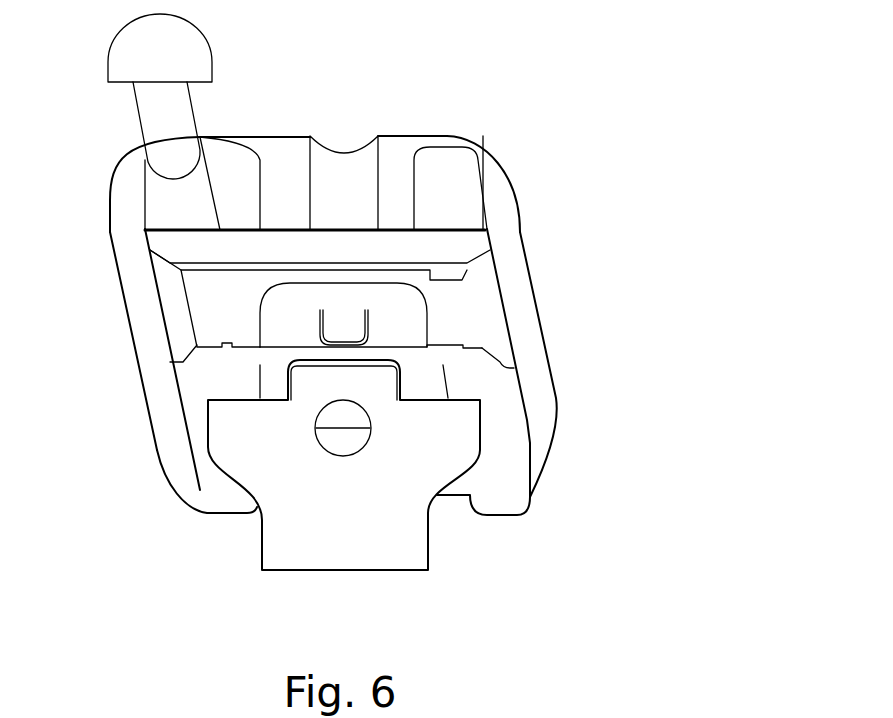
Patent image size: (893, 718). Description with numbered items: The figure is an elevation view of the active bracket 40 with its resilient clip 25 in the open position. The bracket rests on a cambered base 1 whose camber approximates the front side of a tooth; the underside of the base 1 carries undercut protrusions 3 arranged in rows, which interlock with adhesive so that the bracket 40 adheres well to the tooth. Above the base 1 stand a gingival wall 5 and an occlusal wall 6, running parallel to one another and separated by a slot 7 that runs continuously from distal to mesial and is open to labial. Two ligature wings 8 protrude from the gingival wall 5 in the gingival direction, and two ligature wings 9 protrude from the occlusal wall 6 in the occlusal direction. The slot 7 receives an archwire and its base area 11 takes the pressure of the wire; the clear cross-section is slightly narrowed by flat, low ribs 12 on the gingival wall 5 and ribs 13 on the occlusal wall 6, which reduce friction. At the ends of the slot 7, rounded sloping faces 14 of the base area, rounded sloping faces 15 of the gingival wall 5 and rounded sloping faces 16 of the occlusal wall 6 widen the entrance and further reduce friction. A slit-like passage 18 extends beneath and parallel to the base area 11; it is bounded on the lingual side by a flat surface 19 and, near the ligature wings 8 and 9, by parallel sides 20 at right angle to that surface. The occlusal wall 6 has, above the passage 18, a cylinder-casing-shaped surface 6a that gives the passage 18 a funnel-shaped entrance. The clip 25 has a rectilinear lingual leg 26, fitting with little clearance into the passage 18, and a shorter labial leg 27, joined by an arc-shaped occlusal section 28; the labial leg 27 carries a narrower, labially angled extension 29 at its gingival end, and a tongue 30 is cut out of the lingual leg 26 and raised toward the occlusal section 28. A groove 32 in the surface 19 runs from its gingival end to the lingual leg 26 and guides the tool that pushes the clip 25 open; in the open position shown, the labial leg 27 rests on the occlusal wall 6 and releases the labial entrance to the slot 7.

The base 1 is at (130, 185).
The protrusions 3 is at (164, 122).
The gingival wall 5 is at (492, 240).
The occlusal wall 6 is at (267, 383).
The cylinder-casing-shaped surface 6a is at (463, 520).
The slot 7 is at (470, 315).
The ligature wings 8 is at (200, 175).
The ligature wings 9 is at (223, 500).
The base area 11 is at (212, 330).
The ribs 12 is at (268, 252).
The ribs 13 is at (195, 350).
The rounded sloping faces 14 is at (172, 300).
The rounded sloping faces 15 is at (157, 258).
The rounded sloping faces 16 is at (237, 343).
The passage 18 is at (339, 118).
The surface 19 is at (423, 143).
The sides 20 is at (242, 278).
The clip 25 is at (287, 522).
The lingual leg 26 is at (282, 310).
The labial leg 27 is at (423, 452).
The occlusal section 28 is at (407, 562).
The extension 29 is at (382, 383).
The tongue 30 is at (343, 323).
The groove 32 is at (347, 167).
The active bracket 40 is at (586, 231).